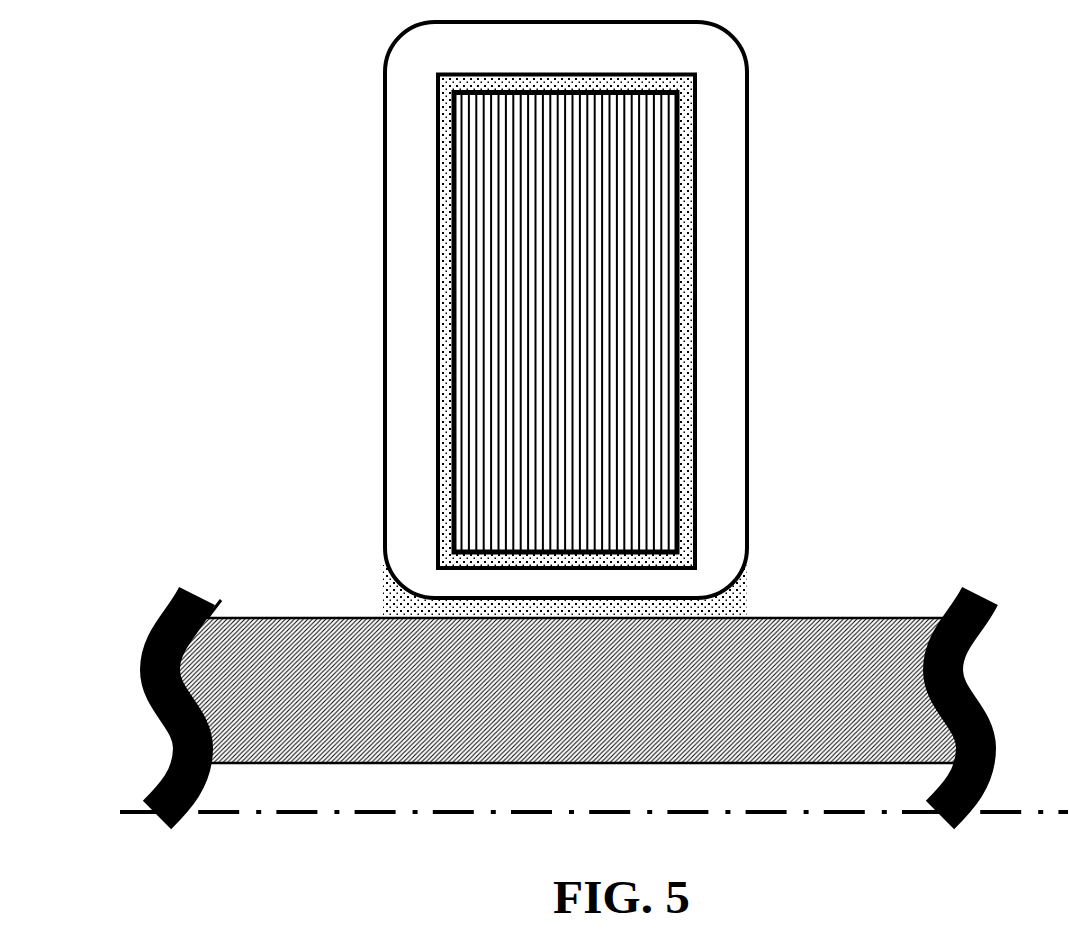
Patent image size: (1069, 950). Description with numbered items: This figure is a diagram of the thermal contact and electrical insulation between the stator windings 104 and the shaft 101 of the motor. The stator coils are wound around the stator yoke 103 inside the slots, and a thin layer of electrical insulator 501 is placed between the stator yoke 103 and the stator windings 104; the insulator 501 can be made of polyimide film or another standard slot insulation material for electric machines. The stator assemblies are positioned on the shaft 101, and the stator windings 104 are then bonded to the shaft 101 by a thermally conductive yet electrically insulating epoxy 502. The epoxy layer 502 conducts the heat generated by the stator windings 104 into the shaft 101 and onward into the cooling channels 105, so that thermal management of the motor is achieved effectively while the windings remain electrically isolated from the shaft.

The shaft 101 is at (308, 640).
The stator yoke 103 is at (647, 173).
The stator windings 104 is at (403, 140).
The cooling channels 105 is at (333, 792).
The electrical insulator 501 is at (443, 253).
The epoxy layer 502 is at (405, 613).